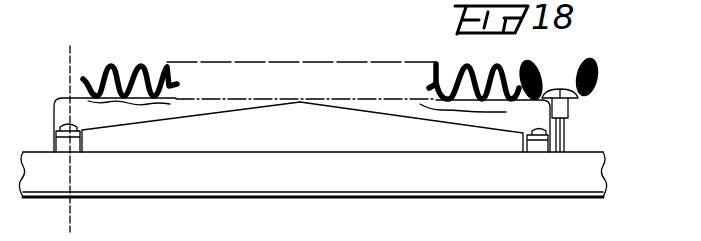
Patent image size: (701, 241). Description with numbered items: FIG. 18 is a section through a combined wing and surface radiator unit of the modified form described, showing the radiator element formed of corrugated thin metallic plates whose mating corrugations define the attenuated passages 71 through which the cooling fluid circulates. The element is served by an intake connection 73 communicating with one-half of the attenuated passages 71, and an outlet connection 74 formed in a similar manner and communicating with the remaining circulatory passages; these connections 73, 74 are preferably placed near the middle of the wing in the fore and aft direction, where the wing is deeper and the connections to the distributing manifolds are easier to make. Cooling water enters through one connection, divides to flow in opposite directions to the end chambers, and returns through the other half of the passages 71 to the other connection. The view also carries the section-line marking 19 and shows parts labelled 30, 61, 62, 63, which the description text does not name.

The section line 19- 19 is at (70, 225).
The sealing strip 30 is at (503, 111).
The pin stem 61 is at (566, 128).
The screw head 62 is at (545, 93).
The resilient bumper 63 is at (598, 78).
The attenuated passages 71 is at (144, 72).
The intake connection 73 is at (172, 114).
The outlet connection 74 is at (478, 127).